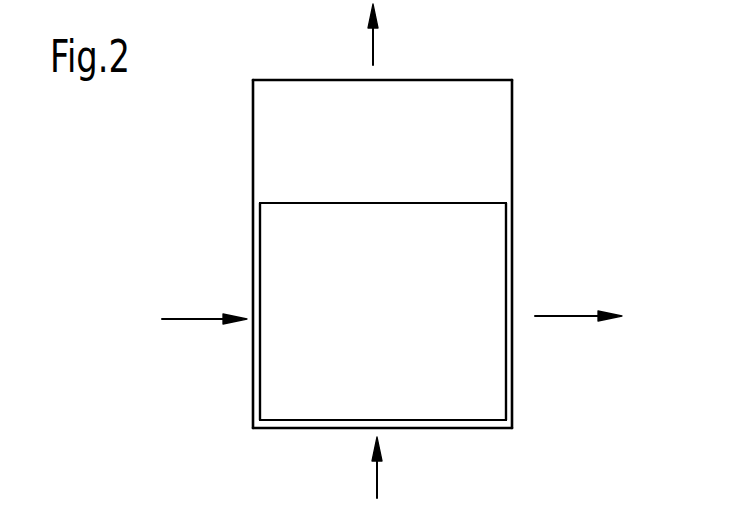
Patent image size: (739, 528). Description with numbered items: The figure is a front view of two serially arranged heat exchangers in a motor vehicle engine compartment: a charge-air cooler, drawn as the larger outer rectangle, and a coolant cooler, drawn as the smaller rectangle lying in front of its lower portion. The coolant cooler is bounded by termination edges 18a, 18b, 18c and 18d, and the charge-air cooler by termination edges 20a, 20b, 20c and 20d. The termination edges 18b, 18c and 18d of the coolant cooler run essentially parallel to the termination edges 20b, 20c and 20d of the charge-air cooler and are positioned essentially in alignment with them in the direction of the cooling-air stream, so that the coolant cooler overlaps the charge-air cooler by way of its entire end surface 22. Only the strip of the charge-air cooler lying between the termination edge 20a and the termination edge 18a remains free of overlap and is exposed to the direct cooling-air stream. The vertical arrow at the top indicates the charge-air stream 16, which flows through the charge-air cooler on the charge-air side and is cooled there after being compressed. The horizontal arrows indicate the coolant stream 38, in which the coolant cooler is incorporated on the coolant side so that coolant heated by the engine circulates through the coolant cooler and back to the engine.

The charge-air stream 16 is at (373, 47).
The termination edge of the coolant cooler 18a is at (440, 199).
The termination edge of the coolant cooler 18b is at (515, 287).
The termination edge of the coolant cooler 18c is at (432, 428).
The termination edge of the coolant cooler 18d is at (257, 387).
The termination edge of the charge-air cooler 20a is at (462, 80).
The termination edge of the charge-air cooler 20b is at (513, 403).
The termination edge of the charge-air cooler 20c is at (330, 428).
The termination edge of the charge-air cooler 20d is at (255, 148).
The end surface 22 is at (333, 220).
The coolant stream 38 is at (192, 319).